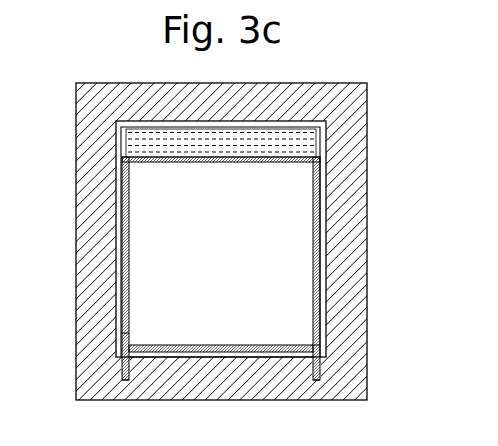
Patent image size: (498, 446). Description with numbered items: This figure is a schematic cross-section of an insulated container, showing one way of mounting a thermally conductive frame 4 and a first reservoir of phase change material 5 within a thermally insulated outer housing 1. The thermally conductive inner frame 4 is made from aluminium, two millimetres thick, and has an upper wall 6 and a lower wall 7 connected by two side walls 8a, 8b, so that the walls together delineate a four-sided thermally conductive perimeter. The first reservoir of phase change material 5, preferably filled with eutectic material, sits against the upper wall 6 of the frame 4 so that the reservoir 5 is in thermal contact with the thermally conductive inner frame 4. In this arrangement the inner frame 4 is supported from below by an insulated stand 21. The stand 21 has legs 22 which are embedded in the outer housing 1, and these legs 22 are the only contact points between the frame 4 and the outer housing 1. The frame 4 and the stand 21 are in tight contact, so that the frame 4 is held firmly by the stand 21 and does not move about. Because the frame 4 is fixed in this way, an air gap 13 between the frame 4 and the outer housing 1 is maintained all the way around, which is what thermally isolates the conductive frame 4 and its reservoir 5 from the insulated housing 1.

The thermally insulated outer housing 1 is at (343, 298).
The thermally conductive inner frame 4 is at (328, 206).
The first reservoir of phase change material 5 is at (272, 123).
The upper wall 6 is at (160, 157).
The lower wall 7 is at (160, 345).
The side wall 8a is at (125, 262).
The side wall 8b is at (318, 250).
The air gap 13 is at (118, 213).
The insulated stand 21 is at (302, 353).
The legs 22 is at (123, 372).